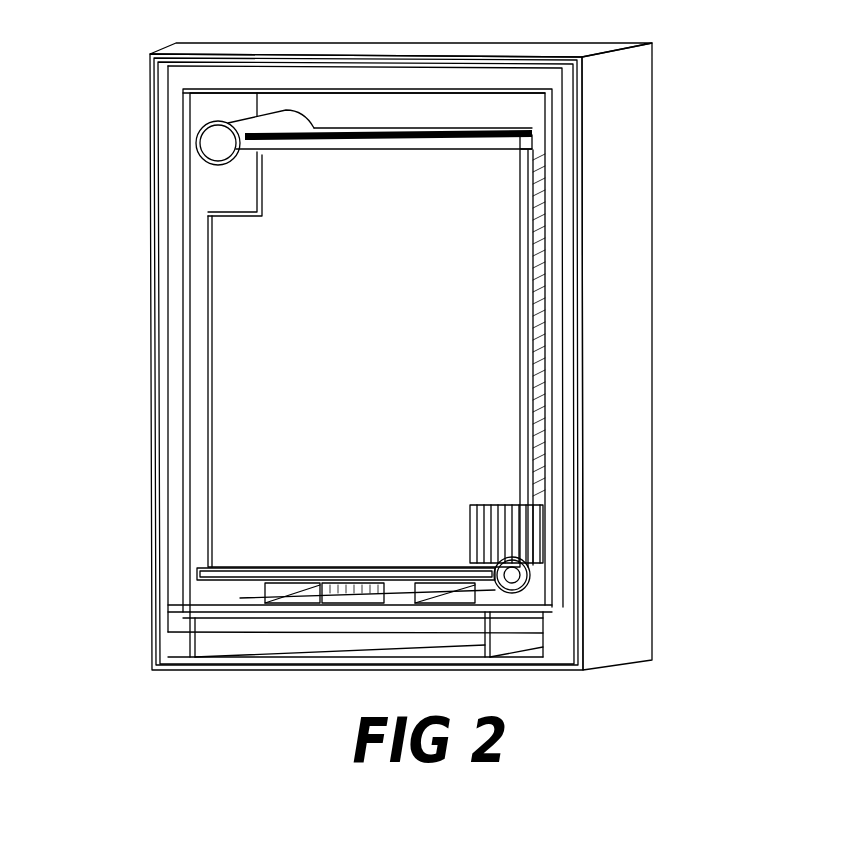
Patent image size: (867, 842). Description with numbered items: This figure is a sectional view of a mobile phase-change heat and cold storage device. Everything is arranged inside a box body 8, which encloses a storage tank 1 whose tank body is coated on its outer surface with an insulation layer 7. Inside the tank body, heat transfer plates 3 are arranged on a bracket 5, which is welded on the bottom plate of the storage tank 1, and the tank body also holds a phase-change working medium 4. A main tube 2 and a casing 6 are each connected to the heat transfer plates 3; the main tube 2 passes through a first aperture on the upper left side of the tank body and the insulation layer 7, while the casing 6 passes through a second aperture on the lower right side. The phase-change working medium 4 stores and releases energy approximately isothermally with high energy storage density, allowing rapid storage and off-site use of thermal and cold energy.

The storage tank 1 is at (180, 113).
The main tube 2 is at (208, 148).
The heat transfer plate 3 is at (273, 191).
The phase-change working medium 4 is at (198, 335).
The bracket 5 is at (256, 592).
The casing 6 is at (536, 569).
The insulation layer 7 is at (556, 463).
The box body 8 is at (612, 289).